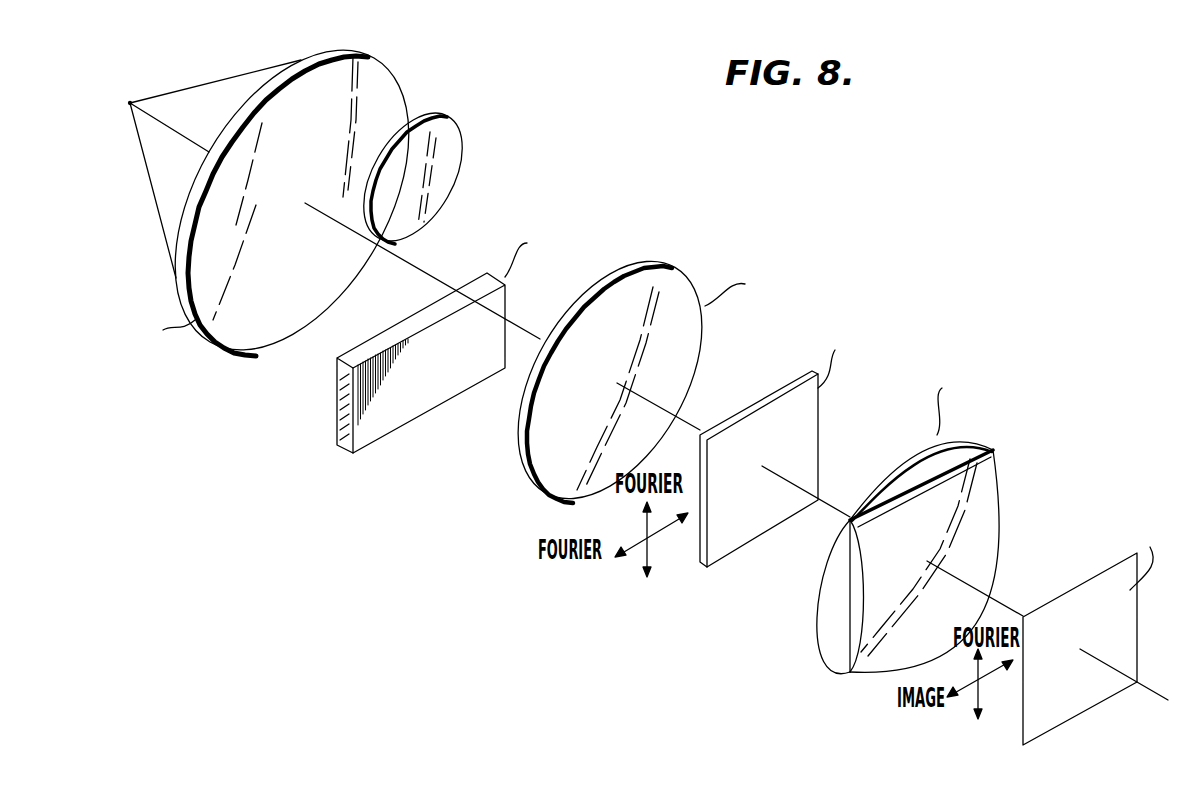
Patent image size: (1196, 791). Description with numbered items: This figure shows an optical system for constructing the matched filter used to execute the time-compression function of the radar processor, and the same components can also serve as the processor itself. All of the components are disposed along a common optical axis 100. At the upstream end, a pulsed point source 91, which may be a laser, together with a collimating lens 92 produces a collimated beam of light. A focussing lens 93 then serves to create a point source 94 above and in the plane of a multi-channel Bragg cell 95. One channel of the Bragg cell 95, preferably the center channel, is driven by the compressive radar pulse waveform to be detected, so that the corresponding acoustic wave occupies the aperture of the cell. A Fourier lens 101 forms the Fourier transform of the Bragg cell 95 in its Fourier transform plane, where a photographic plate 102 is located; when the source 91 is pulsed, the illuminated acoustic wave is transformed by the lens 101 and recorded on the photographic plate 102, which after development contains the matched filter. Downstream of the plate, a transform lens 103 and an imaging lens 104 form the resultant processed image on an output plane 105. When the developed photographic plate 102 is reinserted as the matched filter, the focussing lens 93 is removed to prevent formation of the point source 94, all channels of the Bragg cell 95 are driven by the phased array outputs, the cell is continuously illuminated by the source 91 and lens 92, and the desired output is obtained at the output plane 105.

The point source 91 is at (134, 80).
The collimating lens 92 is at (368, 52).
The focussing lens 93 is at (447, 128).
The point source 94 is at (455, 205).
The multi-channel Bragg cell 95 is at (427, 400).
The optical axis 100 is at (523, 332).
The Fourier lens 101 is at (667, 263).
The photographic plate 102 is at (787, 383).
The transform lens 103 is at (907, 448).
The imaging lens 104 is at (1000, 470).
The output plane 105 is at (1082, 583).